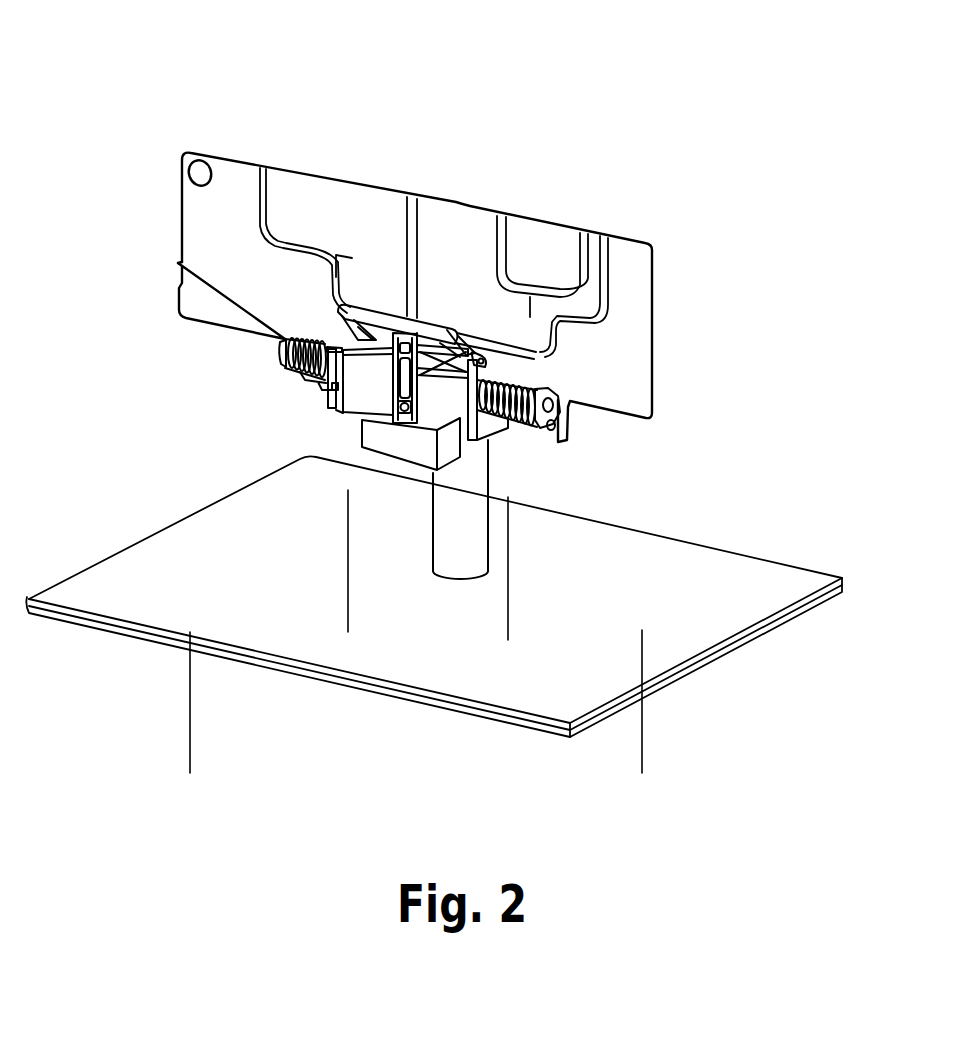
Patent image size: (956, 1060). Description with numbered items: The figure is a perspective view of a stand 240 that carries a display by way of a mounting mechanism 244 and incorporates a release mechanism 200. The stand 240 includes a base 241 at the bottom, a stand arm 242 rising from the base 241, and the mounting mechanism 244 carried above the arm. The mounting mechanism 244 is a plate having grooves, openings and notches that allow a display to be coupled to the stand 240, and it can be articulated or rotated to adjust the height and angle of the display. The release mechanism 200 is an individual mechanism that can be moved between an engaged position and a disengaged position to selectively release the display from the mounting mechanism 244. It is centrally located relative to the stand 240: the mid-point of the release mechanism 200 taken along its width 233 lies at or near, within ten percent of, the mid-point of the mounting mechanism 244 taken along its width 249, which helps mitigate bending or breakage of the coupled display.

The stand 240 is at (245, 97).
The mounting mechanism 244 is at (178, 230).
The release mechanism 200 is at (353, 405).
The stand arm 242 is at (491, 481).
The base 241 is at (713, 547).
The width of the release mechanism 233 is at (472, 628).
The width of the mounting mechanism 249 is at (607, 768).